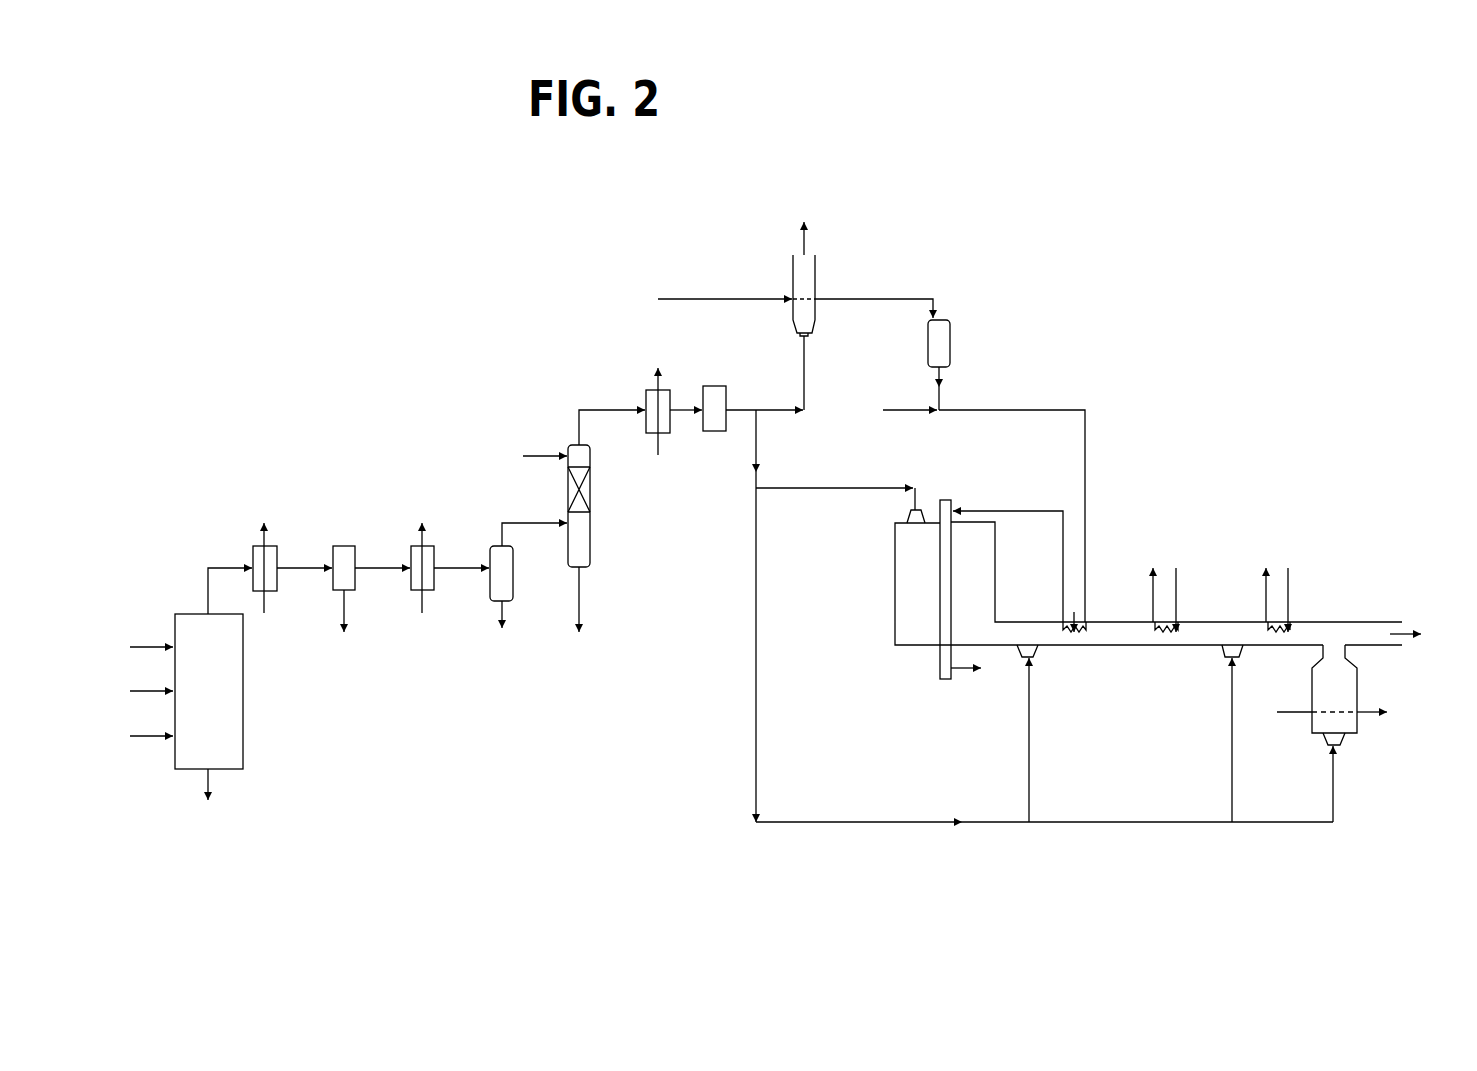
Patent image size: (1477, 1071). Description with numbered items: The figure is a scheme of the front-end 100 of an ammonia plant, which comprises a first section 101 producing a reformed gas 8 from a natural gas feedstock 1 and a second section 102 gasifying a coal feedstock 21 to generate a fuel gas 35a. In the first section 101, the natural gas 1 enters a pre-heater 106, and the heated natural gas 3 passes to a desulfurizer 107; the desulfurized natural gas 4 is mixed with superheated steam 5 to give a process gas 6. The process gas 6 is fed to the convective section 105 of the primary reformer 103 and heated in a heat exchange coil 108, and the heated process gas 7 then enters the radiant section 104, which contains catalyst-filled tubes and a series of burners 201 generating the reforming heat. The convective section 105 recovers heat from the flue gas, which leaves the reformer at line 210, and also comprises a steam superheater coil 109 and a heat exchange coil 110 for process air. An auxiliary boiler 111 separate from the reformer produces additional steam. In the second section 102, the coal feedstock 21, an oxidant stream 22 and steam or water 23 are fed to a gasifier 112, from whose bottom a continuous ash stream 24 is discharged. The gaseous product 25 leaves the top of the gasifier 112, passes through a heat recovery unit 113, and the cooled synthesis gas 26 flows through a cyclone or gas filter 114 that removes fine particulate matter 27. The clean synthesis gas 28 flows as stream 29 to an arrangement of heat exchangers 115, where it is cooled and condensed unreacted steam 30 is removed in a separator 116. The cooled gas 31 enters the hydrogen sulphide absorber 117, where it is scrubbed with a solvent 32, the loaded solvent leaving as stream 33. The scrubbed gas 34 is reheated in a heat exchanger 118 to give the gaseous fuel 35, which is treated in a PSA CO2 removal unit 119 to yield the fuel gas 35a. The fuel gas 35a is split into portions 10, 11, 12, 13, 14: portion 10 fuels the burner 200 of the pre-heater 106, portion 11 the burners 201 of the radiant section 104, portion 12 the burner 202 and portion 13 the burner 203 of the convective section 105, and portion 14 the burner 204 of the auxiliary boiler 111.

The front-end 100 is at (1160, 245).
The first section 101 is at (965, 243).
The second section 102 is at (364, 431).
The primary reformer 103 is at (1176, 507).
The radiant section 104 is at (929, 703).
The convective section 105 is at (1129, 713).
The pre-heater 106 is at (815, 265).
The desulfurizer 107 is at (950, 343).
The heat exchange coil 108 is at (1075, 632).
The steam superheater coil 109 is at (1173, 620).
The heat exchange coil for the process air 110 is at (1287, 622).
The auxiliary boiler 111 is at (1357, 700).
The gasifier 112 is at (243, 723).
The heat recovery unit 113 is at (277, 552).
The cyclone or gas filter 114 is at (357, 550).
The arrangement of heat exchangers 115 is at (435, 550).
The separator 116 is at (513, 587).
The hydrogen sulphide absorber 117 is at (590, 532).
The heat exchanger 118 is at (646, 392).
The PSA CO2 removal unit 119 is at (710, 385).
The burner of the desulfurizer preheater 200 is at (804, 335).
The burners of the radiant section 201 is at (908, 513).
The burner 202 is at (1040, 660).
The burner 203 is at (1222, 647).
The burner of the auxiliary steam generator 204 is at (1340, 742).
The flue gas line 210 is at (1429, 634).
The natural gas feedstock 1 is at (718, 299).
The heated natural gas 3 is at (873, 302).
The desulfurized natural gas 4 is at (939, 397).
The superheated steam 5 is at (903, 410).
The process gas 6 is at (1017, 408).
The heated process gas 7 is at (987, 510).
The reformed gas 8 is at (974, 668).
The fuel gas portion 10 is at (770, 412).
The fuel gas portion 11 is at (817, 490).
The fuel gas portion 12 is at (1029, 762).
The fuel gas portion 13 is at (1232, 797).
The fuel gas portion 14 is at (1333, 808).
The coal feedstock 21 is at (136, 647).
The oxidant stream 22 is at (136, 691).
The steam or water 23 is at (136, 736).
The ash stream 24 is at (212, 801).
The gaseous product 25 is at (232, 563).
The cooled synthesis gas 26 is at (288, 572).
The fine particulate matter 27 is at (347, 625).
The clean synthesis gas 28 is at (367, 572).
The stream 29 is at (445, 572).
The condensed unreacted steam 30 is at (498, 630).
The cooled gas 31 is at (530, 525).
The solvent 32 is at (532, 456).
The loaded solvent stream 33 is at (583, 615).
The scrubbed gas 34 is at (600, 412).
The gaseous fuel 35 is at (680, 412).
The fuel gas 35a is at (743, 412).